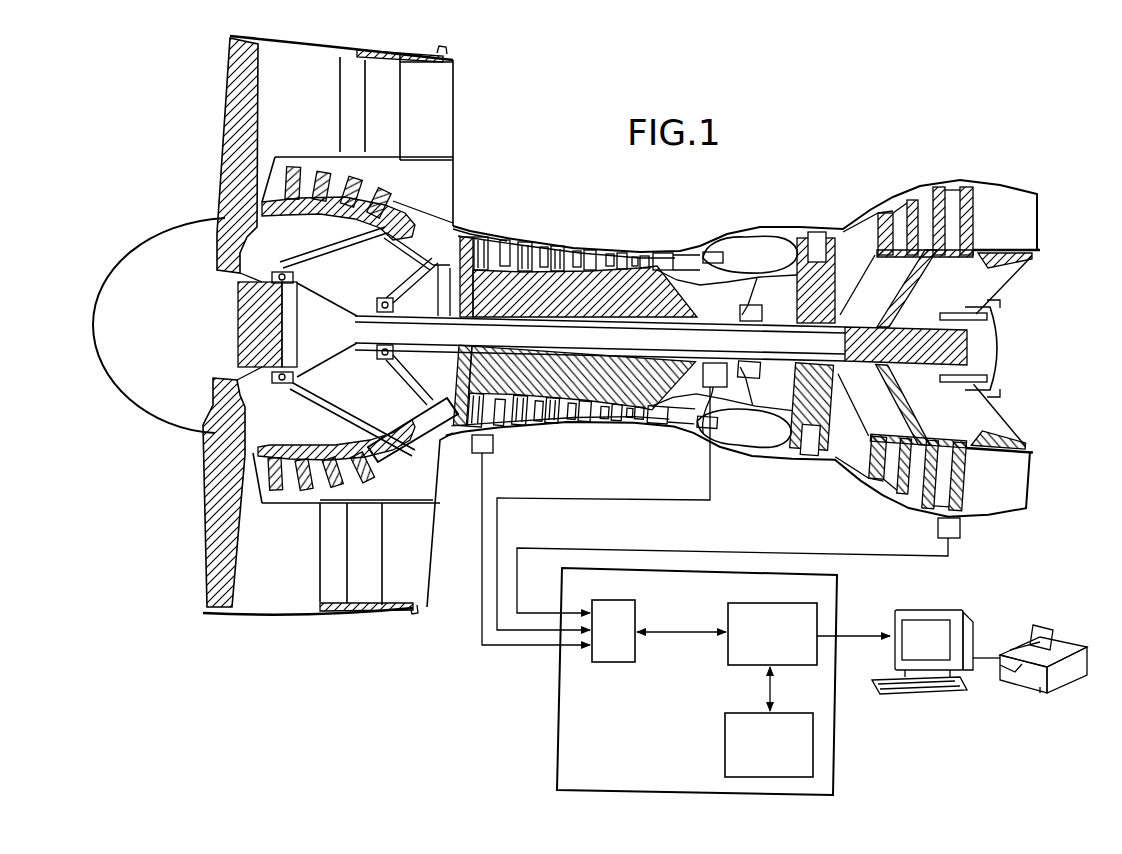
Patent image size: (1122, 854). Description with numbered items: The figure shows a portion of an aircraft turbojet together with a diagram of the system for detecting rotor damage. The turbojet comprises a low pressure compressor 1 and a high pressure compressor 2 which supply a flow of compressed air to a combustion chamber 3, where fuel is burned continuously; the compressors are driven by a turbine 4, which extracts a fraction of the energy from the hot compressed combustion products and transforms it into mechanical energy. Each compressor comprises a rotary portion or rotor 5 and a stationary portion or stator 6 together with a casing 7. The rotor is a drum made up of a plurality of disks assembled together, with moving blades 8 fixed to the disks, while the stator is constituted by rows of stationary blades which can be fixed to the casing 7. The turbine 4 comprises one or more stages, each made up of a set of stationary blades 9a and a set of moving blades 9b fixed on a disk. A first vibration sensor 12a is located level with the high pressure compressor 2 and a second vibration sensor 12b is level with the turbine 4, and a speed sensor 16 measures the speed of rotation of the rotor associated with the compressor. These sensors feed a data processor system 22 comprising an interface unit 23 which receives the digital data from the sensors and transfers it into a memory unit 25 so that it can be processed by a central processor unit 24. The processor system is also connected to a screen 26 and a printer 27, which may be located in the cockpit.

The low pressure compressor 1 is at (316, 186).
The high pressure compressor 2 is at (516, 278).
The combustion chamber 3 is at (750, 250).
The turbine 4 is at (886, 216).
The rotor 5 is at (640, 337).
The stator 6 is at (487, 232).
The casing 7 is at (600, 243).
The moving blades 8 is at (568, 438).
The stationary blades 9a is at (952, 188).
The moving blades 9b is at (909, 202).
The first vibration sensor 12a is at (493, 445).
The second vibration sensor 12b is at (960, 530).
The speed sensor 16 is at (703, 372).
The data processor system 22 is at (561, 703).
The interface unit 23 is at (617, 662).
The central processor unit 24 is at (740, 665).
The memory unit 25 is at (725, 740).
The display terminal 26 is at (981, 614).
The printer 27 is at (1073, 633).